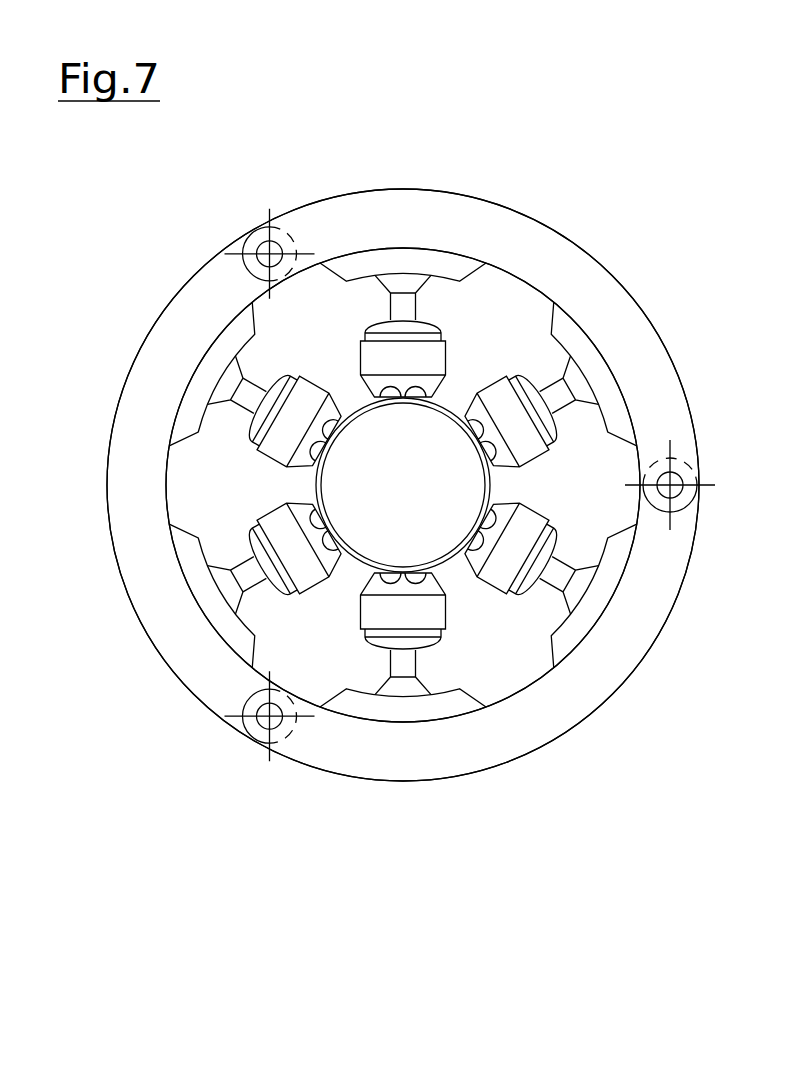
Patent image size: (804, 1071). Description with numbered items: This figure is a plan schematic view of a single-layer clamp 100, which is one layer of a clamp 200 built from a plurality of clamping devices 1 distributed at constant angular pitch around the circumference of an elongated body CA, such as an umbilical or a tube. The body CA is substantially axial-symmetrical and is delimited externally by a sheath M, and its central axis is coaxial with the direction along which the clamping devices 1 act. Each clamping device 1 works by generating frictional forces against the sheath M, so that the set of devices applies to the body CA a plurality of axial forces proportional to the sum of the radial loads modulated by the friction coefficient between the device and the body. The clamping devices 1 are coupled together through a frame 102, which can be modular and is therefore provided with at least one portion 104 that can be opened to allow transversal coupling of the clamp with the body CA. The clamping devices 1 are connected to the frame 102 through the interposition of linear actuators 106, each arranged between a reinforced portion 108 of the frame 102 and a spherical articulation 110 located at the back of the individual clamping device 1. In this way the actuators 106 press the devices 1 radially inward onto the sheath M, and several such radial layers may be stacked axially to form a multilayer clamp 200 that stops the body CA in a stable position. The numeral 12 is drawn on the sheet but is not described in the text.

The clamp 200 is at (633, 163).
The single-layer clamp 100 is at (627, 243).
The frame 102 is at (188, 293).
The portion which can be opened 104 is at (241, 206).
The linear actuator 106 is at (197, 603).
The reinforced portion 108 is at (432, 247).
The spherical articulation 110 is at (273, 460).
The coil 12 is at (313, 400).
The clamping device 1 is at (543, 339).
The sheath M is at (518, 487).
The elongated body CA is at (553, 535).